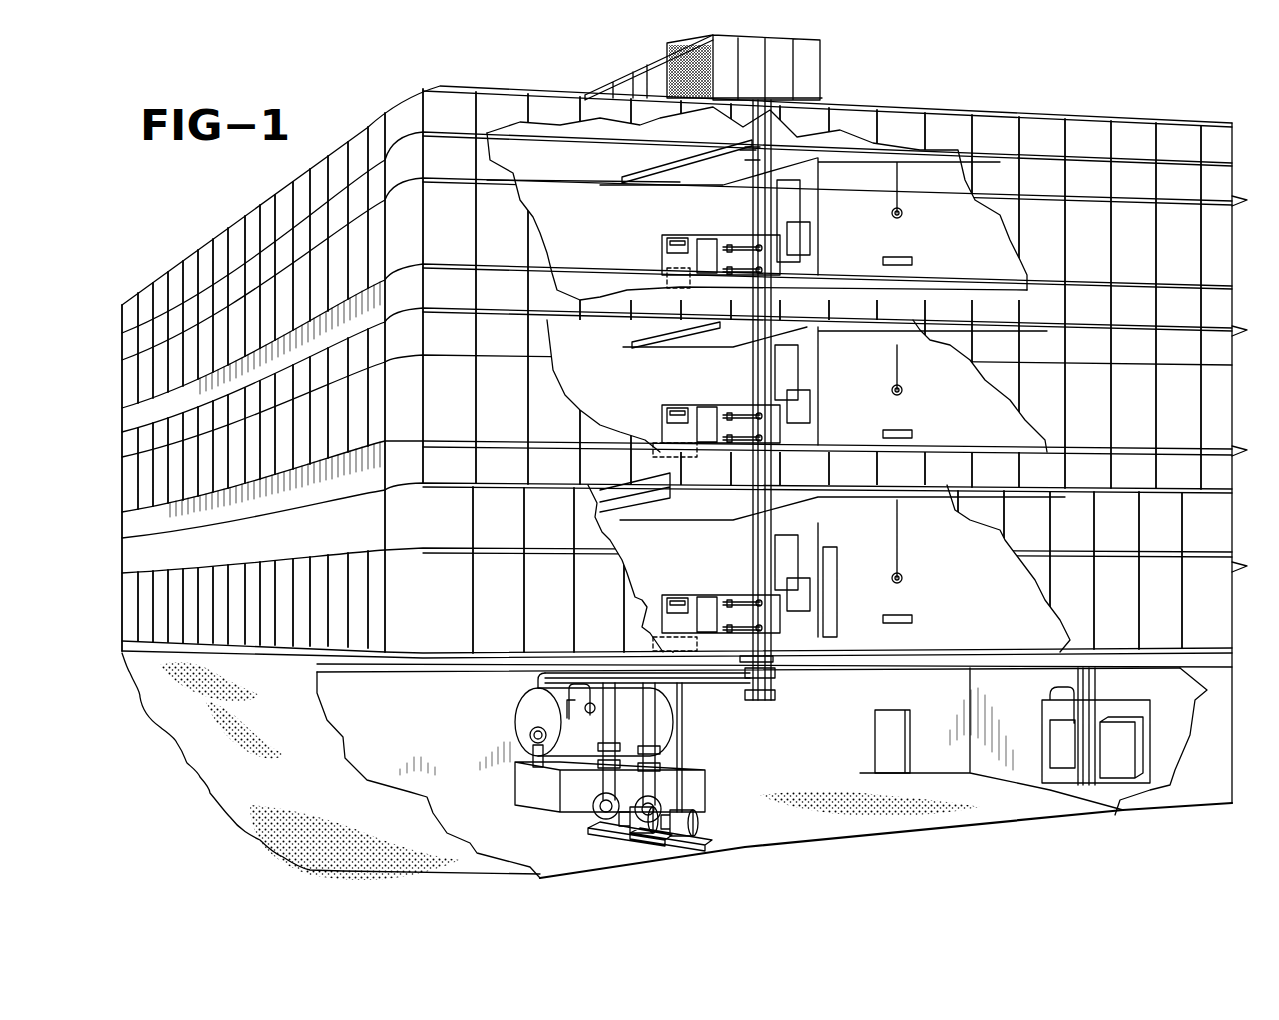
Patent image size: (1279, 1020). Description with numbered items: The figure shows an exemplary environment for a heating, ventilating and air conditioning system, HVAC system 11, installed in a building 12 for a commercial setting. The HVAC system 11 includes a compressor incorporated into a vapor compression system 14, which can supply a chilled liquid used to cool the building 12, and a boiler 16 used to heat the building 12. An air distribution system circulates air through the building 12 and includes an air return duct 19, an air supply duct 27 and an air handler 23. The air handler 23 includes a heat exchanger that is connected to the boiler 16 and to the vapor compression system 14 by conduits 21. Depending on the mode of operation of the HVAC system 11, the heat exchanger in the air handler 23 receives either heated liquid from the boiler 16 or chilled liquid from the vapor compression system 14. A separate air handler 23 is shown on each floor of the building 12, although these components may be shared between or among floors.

The HVAC system 11 is at (700, 46).
The vapor compression system 14 is at (788, 42).
The building 12 is at (1094, 122).
The air supply duct 27 is at (748, 147).
The air handler 23 is at (708, 408).
The air return duct 19 is at (668, 452).
The boiler 16 is at (522, 722).
The conduits 21 is at (773, 655).